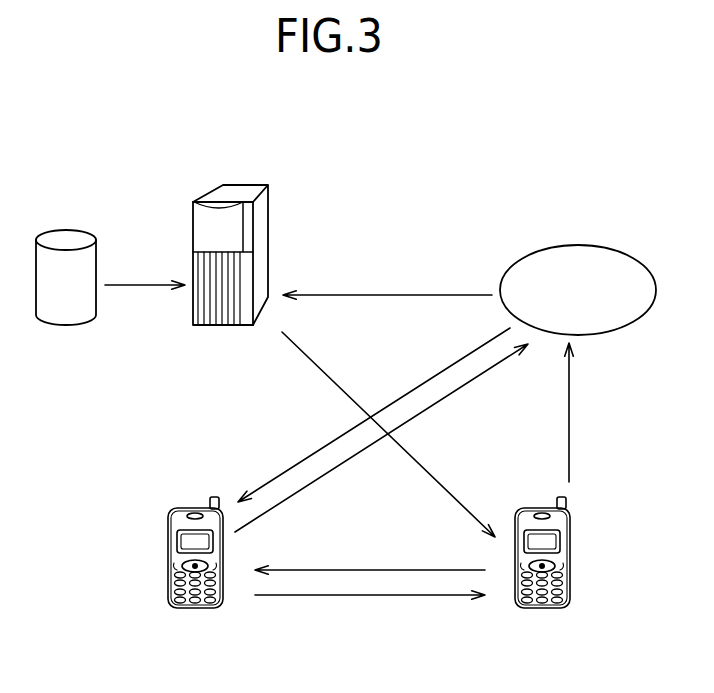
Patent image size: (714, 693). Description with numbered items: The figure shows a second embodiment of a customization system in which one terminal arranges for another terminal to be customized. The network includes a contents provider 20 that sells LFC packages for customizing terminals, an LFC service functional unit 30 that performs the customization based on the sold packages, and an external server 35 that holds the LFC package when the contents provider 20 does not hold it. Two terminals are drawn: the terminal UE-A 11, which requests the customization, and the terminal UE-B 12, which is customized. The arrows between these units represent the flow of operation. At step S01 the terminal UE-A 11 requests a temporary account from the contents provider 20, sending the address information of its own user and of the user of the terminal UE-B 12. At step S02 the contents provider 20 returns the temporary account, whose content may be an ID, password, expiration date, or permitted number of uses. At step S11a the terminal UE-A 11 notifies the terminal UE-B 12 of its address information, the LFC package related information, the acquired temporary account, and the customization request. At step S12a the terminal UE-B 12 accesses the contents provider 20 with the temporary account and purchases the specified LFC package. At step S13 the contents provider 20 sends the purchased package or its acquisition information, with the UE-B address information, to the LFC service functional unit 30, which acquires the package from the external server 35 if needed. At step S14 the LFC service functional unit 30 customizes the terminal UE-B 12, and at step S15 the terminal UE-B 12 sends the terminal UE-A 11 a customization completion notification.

The external server 35 is at (70, 230).
The LFC service functional unit 30 is at (258, 184).
The contents provider 20 is at (607, 245).
The terminal UE-A 11 is at (168, 550).
The terminal UE-B 12 is at (569, 545).
The step S13 is at (395, 293).
The step S14 is at (341, 387).
The step S02 is at (300, 458).
The step S01 is at (347, 462).
The step S15 is at (382, 570).
The step S11a is at (383, 598).
The step S12a is at (569, 443).